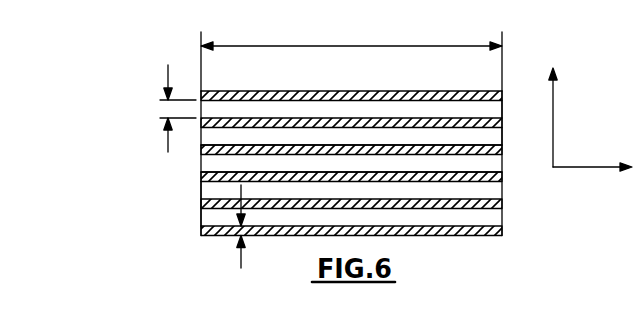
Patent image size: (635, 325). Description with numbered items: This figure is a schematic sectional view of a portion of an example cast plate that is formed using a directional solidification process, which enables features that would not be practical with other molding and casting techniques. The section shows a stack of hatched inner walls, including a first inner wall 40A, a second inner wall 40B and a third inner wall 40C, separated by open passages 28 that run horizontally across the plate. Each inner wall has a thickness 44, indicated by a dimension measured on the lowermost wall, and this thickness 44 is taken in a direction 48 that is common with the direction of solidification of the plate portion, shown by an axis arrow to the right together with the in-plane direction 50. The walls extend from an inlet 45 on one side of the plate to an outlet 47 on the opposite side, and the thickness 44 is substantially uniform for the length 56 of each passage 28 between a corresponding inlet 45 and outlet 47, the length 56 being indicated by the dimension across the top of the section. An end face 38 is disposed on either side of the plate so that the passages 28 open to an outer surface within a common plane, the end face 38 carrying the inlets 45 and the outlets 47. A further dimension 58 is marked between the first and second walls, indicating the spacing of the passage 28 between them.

The passage 28 is at (213, 216).
The end face 38 is at (316, 152).
The first inner wall 40A is at (265, 123).
The second inner wall 40B is at (288, 150).
The third inner wall 40C is at (335, 177).
The thickness 44 is at (241, 259).
The inlet 45 is at (189, 173).
The outlet 47 is at (513, 121).
The direction 48 is at (553, 125).
The horizontal axis 50 is at (583, 168).
The length 56 is at (358, 46).
The layer spacing 58 is at (168, 145).